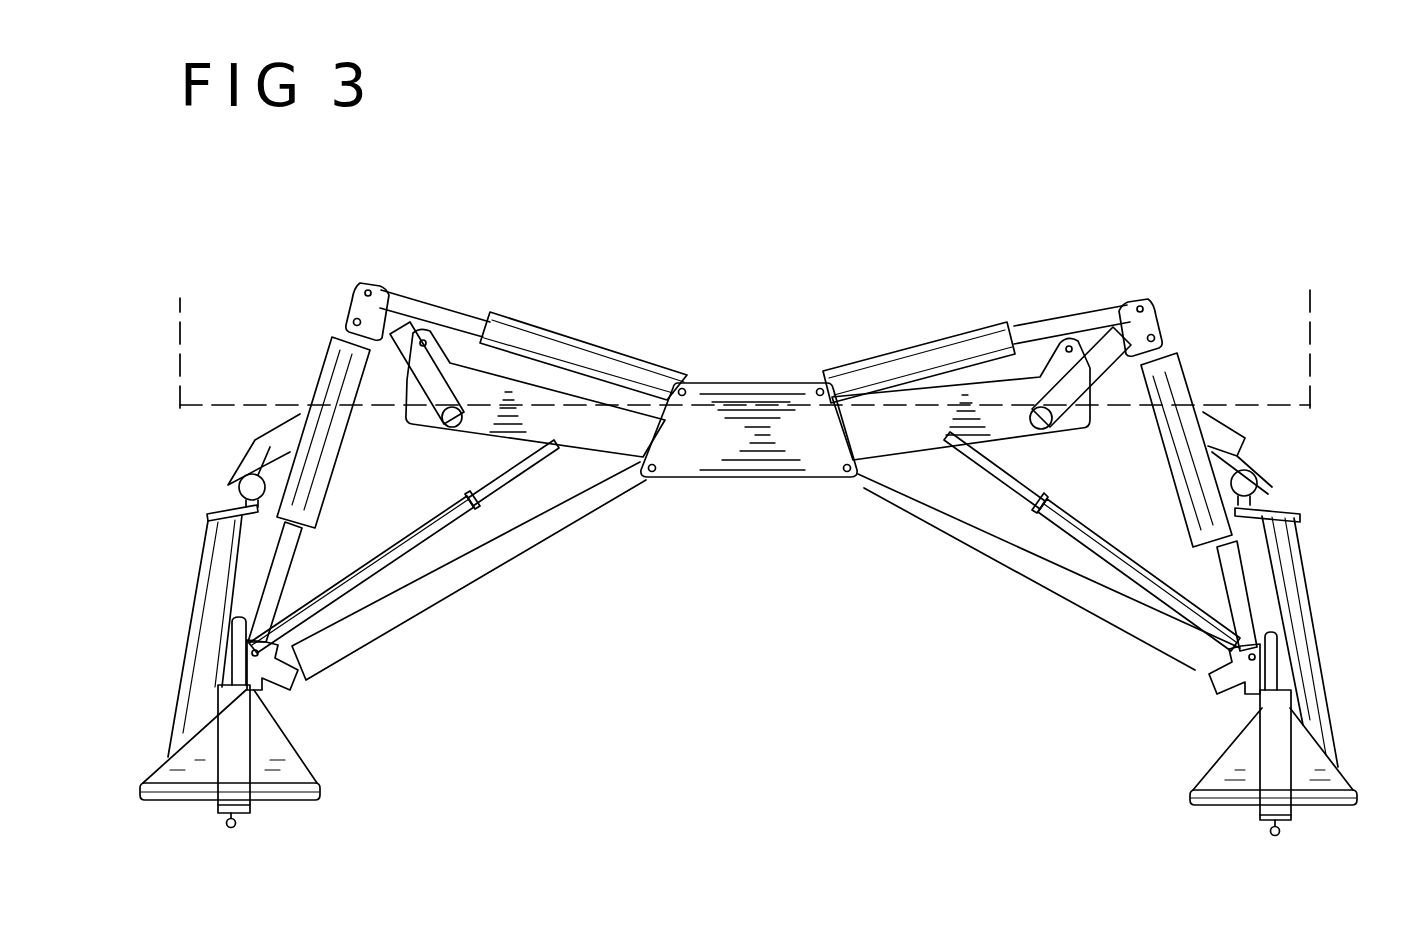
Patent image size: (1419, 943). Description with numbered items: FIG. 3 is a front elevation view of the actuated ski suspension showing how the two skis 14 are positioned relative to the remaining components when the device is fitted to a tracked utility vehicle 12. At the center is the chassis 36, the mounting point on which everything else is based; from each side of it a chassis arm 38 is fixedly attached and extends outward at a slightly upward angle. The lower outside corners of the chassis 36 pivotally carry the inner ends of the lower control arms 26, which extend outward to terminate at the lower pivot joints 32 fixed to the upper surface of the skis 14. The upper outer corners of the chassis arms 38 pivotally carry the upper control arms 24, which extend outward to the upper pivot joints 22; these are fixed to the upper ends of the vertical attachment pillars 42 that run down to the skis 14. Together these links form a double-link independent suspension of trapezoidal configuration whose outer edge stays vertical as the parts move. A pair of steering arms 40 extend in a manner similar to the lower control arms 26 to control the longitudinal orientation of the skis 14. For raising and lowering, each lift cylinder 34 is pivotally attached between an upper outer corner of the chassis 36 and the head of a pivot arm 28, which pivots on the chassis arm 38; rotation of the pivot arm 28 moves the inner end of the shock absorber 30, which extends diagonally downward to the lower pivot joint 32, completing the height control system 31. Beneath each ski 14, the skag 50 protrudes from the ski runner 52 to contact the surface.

The tracked utility vehicle 12 is at (177, 293).
The ski 14 is at (349, 811).
The upper pivot joint 22 is at (230, 497).
The upper control arm 24 is at (255, 442).
The lower control arm 26 is at (408, 620).
The pivot arm 28 is at (406, 316).
The shock absorber 30 is at (327, 347).
The height control system 31 is at (351, 270).
The lower pivot joint 32 is at (273, 653).
The lift cylinder 34 is at (548, 330).
The chassis 36 is at (746, 478).
The chassis arm 38 is at (595, 402).
The steering arm 40 is at (442, 533).
The vertical attachment pillar 42 is at (193, 720).
The skag 50 is at (237, 828).
The ski runner 52 is at (243, 737).